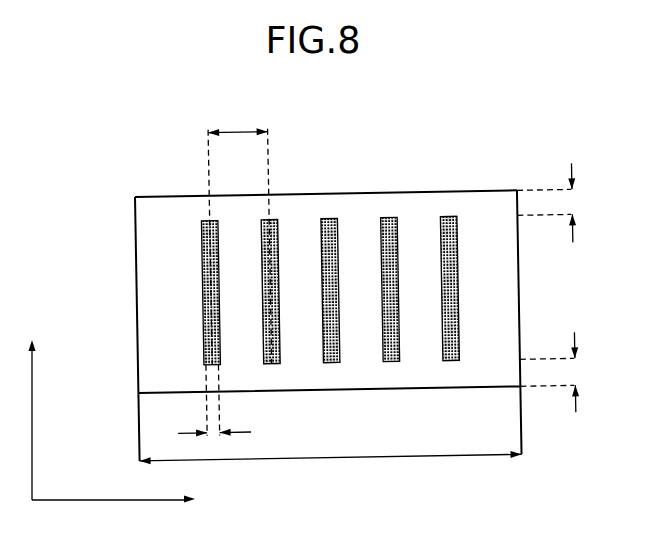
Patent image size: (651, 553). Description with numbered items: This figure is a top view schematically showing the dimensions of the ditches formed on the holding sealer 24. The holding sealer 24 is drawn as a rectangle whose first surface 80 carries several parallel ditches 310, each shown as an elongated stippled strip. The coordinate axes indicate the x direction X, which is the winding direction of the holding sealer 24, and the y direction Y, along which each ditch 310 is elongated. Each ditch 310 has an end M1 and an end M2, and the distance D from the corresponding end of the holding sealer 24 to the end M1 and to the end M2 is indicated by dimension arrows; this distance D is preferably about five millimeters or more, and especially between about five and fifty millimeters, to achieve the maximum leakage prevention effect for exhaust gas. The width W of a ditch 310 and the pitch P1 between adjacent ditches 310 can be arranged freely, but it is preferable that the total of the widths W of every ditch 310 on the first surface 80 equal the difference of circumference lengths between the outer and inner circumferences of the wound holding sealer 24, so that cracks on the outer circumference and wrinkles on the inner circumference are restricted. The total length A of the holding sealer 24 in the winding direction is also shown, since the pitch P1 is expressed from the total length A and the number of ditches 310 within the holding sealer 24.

The first surface 80 is at (161, 197).
The holding sealer 24 is at (431, 198).
The ditch 310 is at (341, 197).
The end of ditch M1 is at (448, 222).
The end of ditch M2 is at (450, 367).
The pitch P1 is at (240, 233).
The width of ditch W is at (216, 400).
The total length A is at (330, 445).
The distance D is at (561, 288).
The x direction X is at (123, 501).
The y direction Y is at (30, 402).